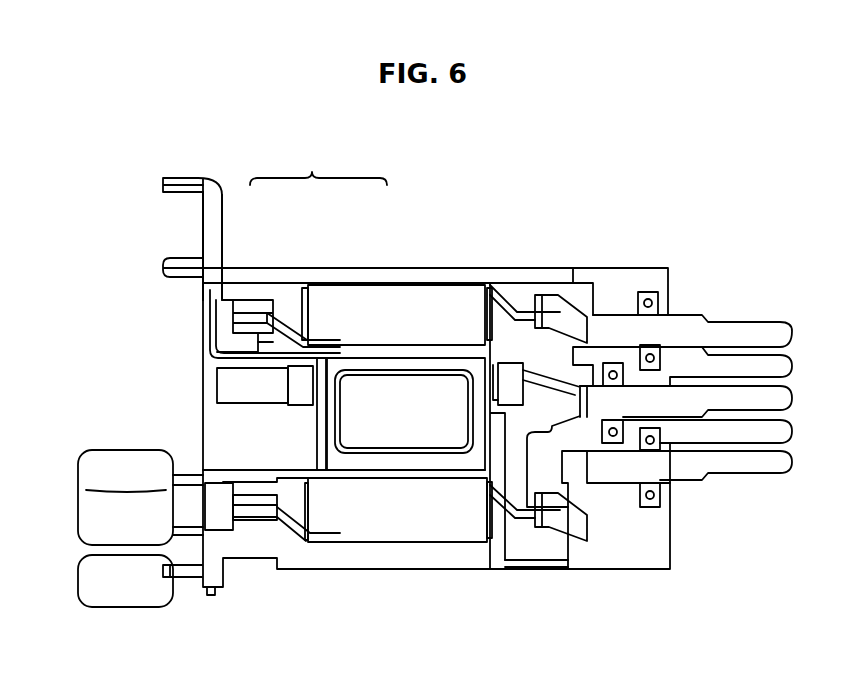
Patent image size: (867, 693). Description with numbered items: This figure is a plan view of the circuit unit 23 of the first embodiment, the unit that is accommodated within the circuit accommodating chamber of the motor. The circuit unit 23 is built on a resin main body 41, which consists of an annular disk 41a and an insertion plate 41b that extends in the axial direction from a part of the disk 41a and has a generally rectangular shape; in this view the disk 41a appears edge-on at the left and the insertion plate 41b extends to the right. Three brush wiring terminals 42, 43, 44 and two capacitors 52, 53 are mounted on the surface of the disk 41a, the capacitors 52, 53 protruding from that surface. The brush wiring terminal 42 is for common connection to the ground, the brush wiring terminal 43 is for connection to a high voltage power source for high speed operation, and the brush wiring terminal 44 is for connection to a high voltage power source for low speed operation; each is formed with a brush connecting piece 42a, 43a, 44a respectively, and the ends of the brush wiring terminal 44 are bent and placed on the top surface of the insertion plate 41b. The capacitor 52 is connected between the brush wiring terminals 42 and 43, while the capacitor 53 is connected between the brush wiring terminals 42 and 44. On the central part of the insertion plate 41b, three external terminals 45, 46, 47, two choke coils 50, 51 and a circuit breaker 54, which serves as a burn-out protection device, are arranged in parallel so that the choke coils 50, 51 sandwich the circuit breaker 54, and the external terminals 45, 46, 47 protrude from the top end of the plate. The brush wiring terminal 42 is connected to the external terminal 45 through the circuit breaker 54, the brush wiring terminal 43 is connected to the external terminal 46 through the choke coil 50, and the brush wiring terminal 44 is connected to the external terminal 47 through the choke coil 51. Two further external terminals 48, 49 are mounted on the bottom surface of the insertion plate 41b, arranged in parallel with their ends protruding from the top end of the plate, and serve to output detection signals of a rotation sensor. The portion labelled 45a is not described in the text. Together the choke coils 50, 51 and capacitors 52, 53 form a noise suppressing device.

The circuit unit 23 is at (528, 249).
The main body 41 is at (388, 221).
The annular disk 41a is at (222, 204).
The insertion plate 41b is at (348, 290).
The brush wiring terminal 42 is at (228, 384).
The brush connecting piece 42a is at (187, 182).
The brush wiring terminal 43 is at (222, 326).
The brush connecting piece 43a is at (165, 268).
The brush wiring terminal 44 is at (214, 503).
The brush connecting piece 44a is at (187, 578).
The external terminal 45 is at (785, 400).
The terminal lead portion 45a is at (536, 548).
The external terminal 46 is at (785, 332).
The external terminal 47 is at (785, 468).
The external terminal 48 is at (785, 434).
The external terminal 49 is at (785, 367).
The choke coil 50 is at (440, 293).
The choke coil 51 is at (433, 530).
The capacitor 52 is at (87, 502).
The capacitor 53 is at (87, 577).
The circuit breaker 54 is at (395, 388).